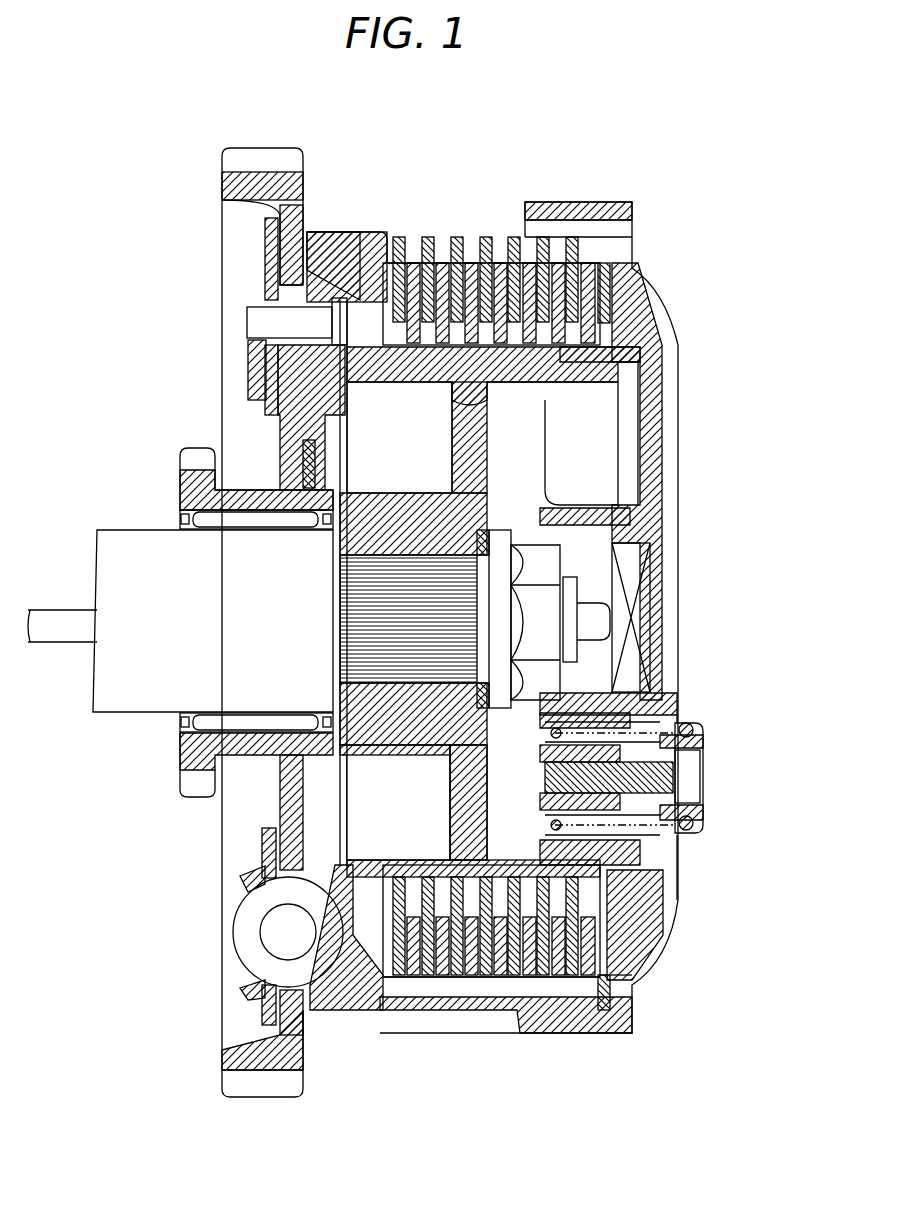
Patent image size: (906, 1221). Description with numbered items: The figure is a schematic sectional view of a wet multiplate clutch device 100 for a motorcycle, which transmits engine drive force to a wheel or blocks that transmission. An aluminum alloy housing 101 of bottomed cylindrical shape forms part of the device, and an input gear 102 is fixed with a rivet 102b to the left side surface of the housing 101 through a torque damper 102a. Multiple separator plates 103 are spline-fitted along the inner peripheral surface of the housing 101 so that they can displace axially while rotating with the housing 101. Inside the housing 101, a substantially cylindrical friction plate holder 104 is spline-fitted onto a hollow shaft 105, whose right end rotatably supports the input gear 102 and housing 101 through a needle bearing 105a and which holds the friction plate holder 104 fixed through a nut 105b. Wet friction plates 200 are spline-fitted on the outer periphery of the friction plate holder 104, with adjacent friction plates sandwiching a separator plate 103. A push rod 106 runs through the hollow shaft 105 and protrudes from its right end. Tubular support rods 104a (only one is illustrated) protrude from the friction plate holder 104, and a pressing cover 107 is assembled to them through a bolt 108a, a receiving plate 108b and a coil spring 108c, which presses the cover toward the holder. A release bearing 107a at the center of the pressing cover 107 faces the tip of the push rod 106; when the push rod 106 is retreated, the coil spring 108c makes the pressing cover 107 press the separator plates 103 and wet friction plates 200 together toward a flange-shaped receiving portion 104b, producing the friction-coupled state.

The wet multiplate clutch device 100 is at (560, 156).
The housing 101 is at (385, 1012).
The input gear 102 is at (268, 148).
The torque damper 102a is at (233, 932).
The rivet 102b is at (247, 322).
The separator plate 103 is at (487, 250).
The friction plate holder 104 is at (555, 380).
The tubular support rod 104a is at (470, 760).
The receiving portion 104b is at (353, 300).
The shaft 105 is at (114, 530).
The needle bearing 105a is at (183, 725).
The nut 105b is at (523, 552).
The push rod 106 is at (588, 603).
The pressing cover 107 is at (662, 418).
The release bearing 107a is at (650, 596).
The bolt 108a is at (705, 775).
The receiving plate 108b is at (703, 825).
The coil spring 108c is at (688, 723).
The wet friction plate 200 is at (415, 290).